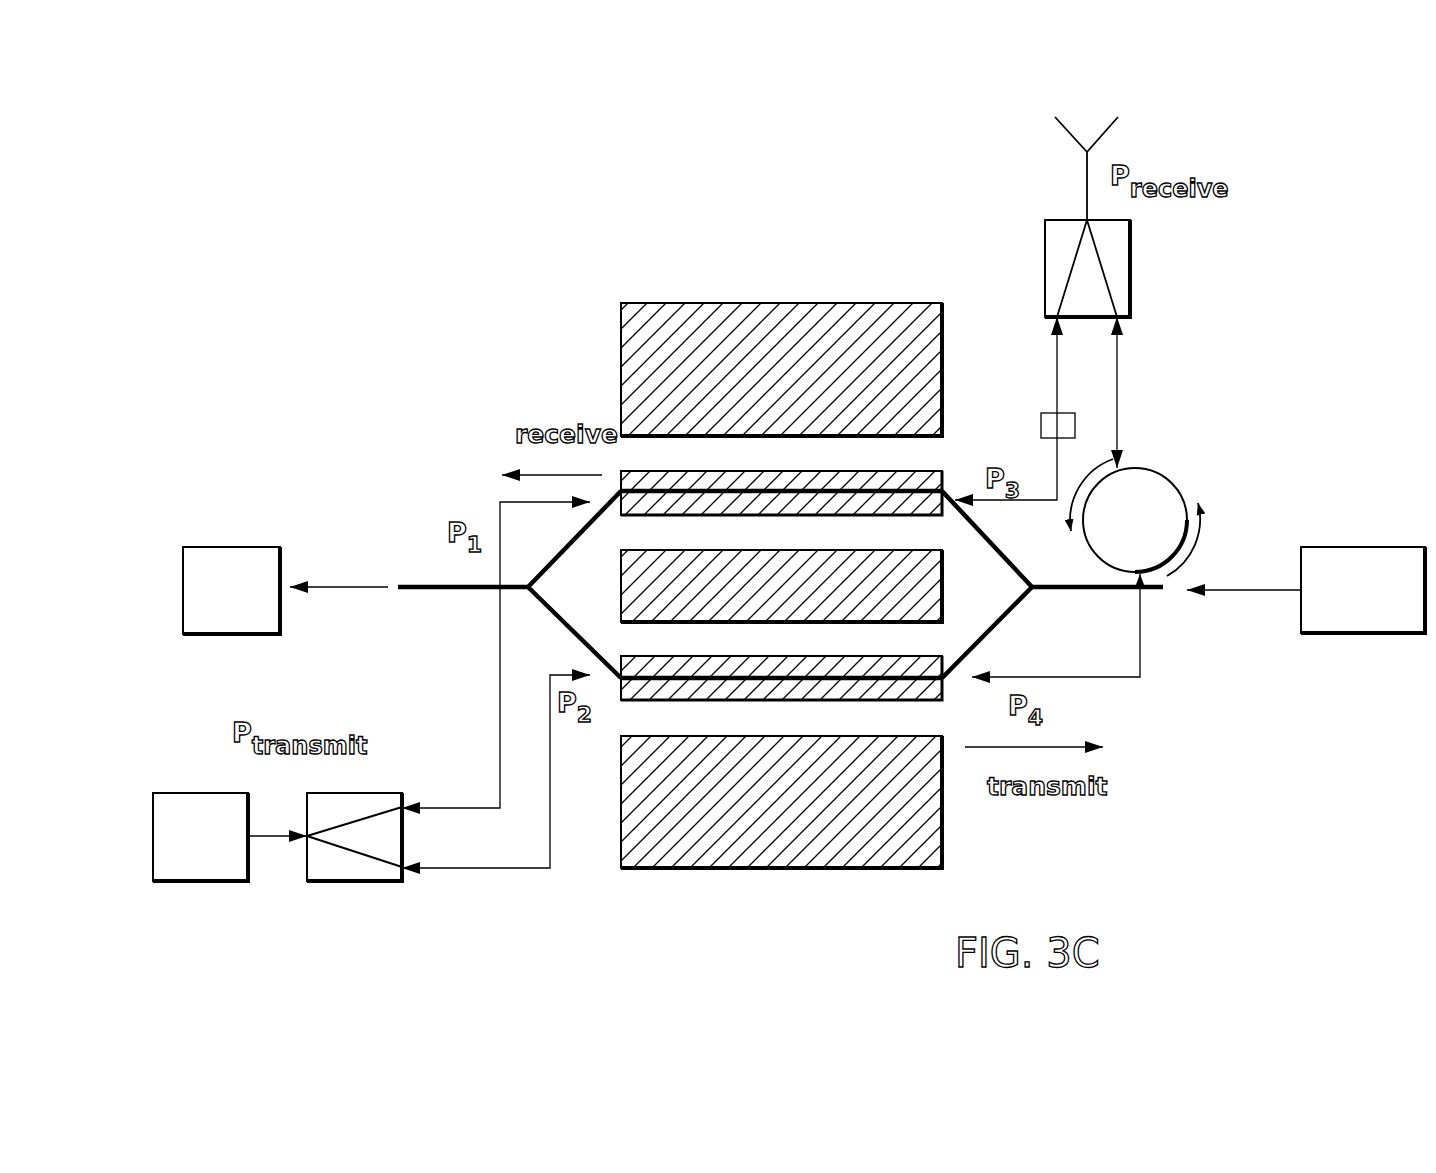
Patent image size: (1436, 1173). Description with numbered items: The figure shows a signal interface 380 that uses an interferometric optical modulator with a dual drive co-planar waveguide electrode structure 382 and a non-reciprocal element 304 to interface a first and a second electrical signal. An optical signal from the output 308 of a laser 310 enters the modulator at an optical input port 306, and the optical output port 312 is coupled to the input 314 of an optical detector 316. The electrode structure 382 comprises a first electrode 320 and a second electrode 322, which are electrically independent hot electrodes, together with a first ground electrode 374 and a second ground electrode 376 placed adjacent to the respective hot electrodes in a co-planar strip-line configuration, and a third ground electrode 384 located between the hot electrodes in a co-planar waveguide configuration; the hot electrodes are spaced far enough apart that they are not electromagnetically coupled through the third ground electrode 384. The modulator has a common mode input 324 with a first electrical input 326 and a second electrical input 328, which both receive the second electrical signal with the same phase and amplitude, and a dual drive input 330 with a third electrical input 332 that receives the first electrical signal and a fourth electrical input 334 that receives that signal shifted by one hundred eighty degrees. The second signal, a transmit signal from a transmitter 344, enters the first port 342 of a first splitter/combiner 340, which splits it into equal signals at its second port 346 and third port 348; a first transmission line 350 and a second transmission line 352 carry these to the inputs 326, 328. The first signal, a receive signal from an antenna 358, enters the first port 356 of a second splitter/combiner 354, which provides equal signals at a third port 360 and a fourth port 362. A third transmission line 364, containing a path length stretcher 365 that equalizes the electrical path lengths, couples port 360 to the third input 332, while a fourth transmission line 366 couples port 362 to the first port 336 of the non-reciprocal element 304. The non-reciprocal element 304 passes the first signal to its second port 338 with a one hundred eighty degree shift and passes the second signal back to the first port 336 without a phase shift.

The non-reciprocal element 304 is at (1098, 550).
The optical input port 306 is at (1036, 592).
The output 308 is at (1300, 592).
The laser 310 is at (1342, 547).
The optical output port 312 is at (528, 594).
The input 314 is at (282, 590).
The optical detector 316 is at (233, 547).
The first electrode 320 is at (643, 502).
The second electrode 322 is at (650, 657).
The common mode input 324 is at (460, 628).
The first electrical input 326 is at (620, 491).
The second electrical input 328 is at (622, 690).
The dual drive input 330 is at (1253, 418).
The third electrical input 332 is at (943, 490).
The fourth electrical input 334 is at (944, 685).
The first port 336 is at (1120, 472).
The second port 338 is at (1150, 592).
The first splitter/combiner 340 is at (358, 882).
The first port 342 is at (303, 838).
The transmitter 344 is at (201, 882).
The second port 346 is at (406, 814).
The third port 348 is at (406, 873).
The first transmission line 350 is at (500, 716).
The second transmission line 352 is at (523, 875).
The second splitter/combiner 354 is at (1130, 262).
The first port 356 is at (1087, 220).
The antenna 358 is at (1118, 128).
The third port 360 is at (1058, 320).
The fourth port 362 is at (1117, 320).
The third transmission line 364 is at (1057, 374).
The path length stretcher 365 is at (1041, 432).
The fourth transmission line 366 is at (1117, 404).
The first ground electrode 374 is at (753, 303).
The second ground electrode 376 is at (753, 868).
The signal interface 380 is at (848, 165).
The electrode structure 382 is at (829, 652).
The third ground electrode 384 is at (790, 550).